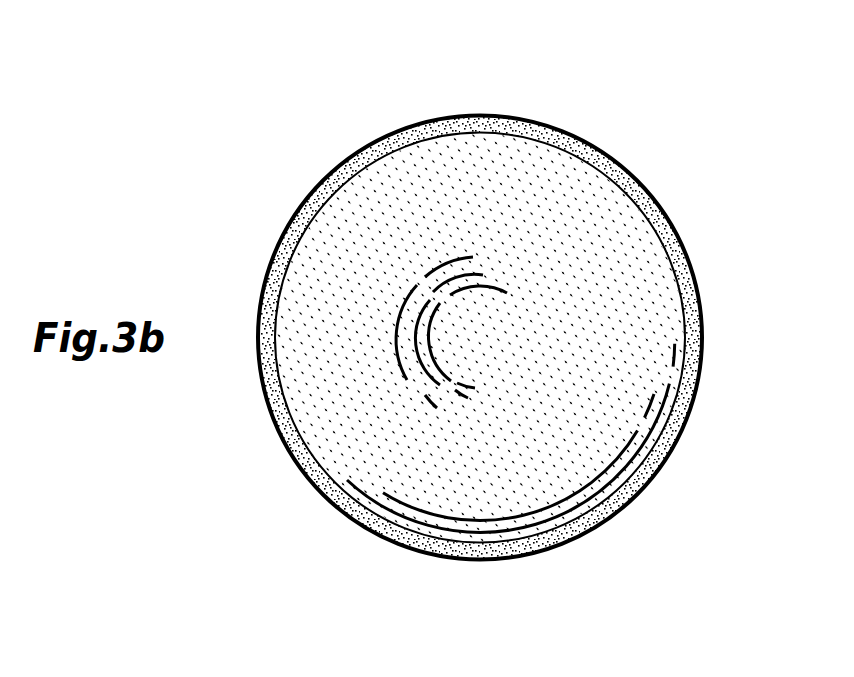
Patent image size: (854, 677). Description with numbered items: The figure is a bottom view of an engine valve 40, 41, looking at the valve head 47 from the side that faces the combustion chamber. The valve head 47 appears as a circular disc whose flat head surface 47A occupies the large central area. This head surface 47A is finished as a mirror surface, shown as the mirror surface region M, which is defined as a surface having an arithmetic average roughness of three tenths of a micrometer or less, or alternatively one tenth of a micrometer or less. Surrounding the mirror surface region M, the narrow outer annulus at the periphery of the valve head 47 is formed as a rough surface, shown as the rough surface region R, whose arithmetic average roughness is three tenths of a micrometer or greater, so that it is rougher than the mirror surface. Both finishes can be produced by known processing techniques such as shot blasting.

The valve 40 is at (588, 124).
The valve 41 is at (506, 319).
The valve head 47 is at (390, 180).
The head surface 47A is at (608, 223).
The mirror surface region M is at (662, 307).
The rough surface region R is at (623, 497).